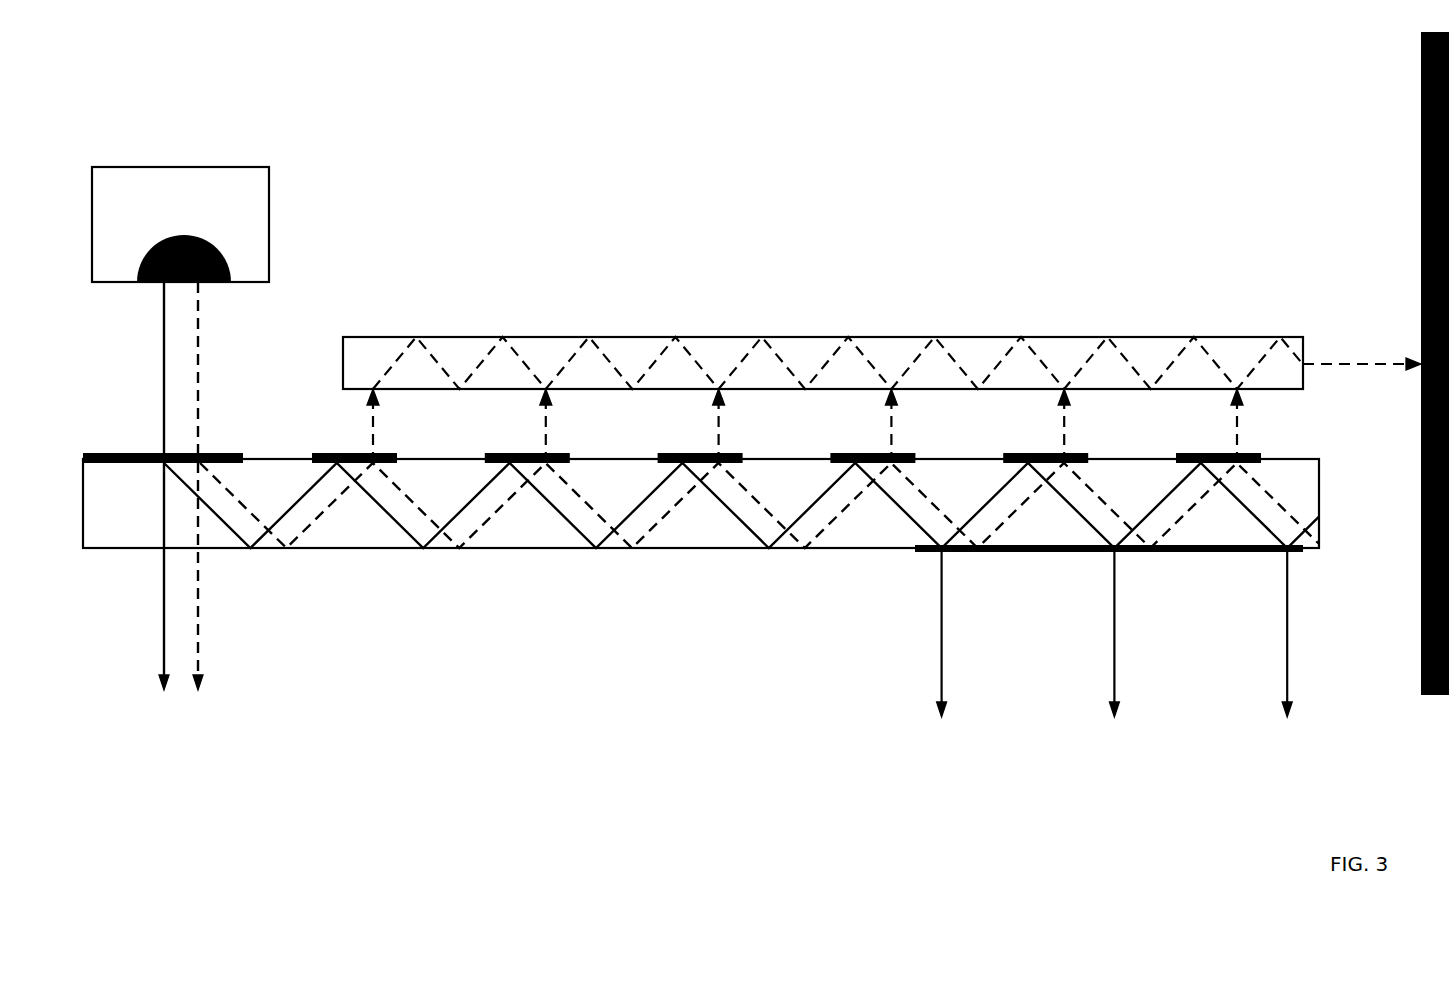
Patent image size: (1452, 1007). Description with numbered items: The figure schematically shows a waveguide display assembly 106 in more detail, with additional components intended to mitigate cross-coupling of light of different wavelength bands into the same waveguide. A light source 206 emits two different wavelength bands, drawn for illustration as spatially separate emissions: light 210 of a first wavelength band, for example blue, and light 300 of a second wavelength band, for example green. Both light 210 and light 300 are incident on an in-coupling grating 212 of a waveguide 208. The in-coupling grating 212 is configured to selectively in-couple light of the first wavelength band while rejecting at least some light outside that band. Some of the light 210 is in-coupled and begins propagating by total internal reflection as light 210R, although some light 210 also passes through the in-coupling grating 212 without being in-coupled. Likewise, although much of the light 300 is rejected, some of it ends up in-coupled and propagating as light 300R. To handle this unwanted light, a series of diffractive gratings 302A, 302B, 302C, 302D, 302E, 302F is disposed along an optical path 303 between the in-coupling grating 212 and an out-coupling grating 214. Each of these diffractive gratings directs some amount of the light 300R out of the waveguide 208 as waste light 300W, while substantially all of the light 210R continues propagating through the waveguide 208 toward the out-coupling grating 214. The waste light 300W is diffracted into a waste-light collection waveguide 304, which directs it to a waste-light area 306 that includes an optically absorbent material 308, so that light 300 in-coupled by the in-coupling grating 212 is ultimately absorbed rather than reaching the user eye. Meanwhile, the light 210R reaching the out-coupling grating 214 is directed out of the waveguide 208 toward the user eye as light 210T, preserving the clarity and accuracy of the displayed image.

The waveguide display assembly 106 is at (426, 213).
The light source 206 is at (269, 187).
The waveguide 208 is at (140, 548).
The light of a first wavelength band 210 is at (164, 340).
The in-coupled light of the first wavelength band 210R is at (400, 530).
The out-coupled light of the first wavelength band 210T is at (938, 672).
The in-coupling grating 212 is at (232, 453).
The out-coupling grating 214 is at (922, 553).
The light of a second wavelength band 300 is at (198, 340).
The in-coupled light of the second wavelength band 300R is at (480, 532).
The waste light 300W is at (372, 433).
The diffractive grating 302A is at (386, 455).
The diffractive grating 302B is at (559, 455).
The diffractive grating 302C is at (732, 455).
The diffractive grating 302D is at (904, 455).
The diffractive grating 302E is at (1077, 455).
The diffractive grating 302F is at (1250, 455).
The optical path 303 is at (686, 520).
The waste-light collection waveguide 304 is at (366, 337).
The waste-light area 306 is at (1330, 316).
The optically absorbent material 308 is at (1421, 80).